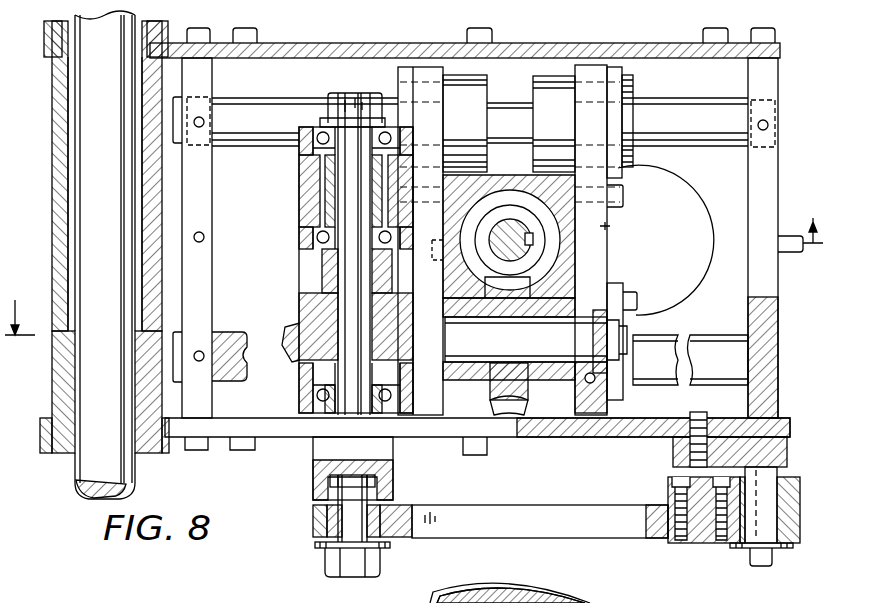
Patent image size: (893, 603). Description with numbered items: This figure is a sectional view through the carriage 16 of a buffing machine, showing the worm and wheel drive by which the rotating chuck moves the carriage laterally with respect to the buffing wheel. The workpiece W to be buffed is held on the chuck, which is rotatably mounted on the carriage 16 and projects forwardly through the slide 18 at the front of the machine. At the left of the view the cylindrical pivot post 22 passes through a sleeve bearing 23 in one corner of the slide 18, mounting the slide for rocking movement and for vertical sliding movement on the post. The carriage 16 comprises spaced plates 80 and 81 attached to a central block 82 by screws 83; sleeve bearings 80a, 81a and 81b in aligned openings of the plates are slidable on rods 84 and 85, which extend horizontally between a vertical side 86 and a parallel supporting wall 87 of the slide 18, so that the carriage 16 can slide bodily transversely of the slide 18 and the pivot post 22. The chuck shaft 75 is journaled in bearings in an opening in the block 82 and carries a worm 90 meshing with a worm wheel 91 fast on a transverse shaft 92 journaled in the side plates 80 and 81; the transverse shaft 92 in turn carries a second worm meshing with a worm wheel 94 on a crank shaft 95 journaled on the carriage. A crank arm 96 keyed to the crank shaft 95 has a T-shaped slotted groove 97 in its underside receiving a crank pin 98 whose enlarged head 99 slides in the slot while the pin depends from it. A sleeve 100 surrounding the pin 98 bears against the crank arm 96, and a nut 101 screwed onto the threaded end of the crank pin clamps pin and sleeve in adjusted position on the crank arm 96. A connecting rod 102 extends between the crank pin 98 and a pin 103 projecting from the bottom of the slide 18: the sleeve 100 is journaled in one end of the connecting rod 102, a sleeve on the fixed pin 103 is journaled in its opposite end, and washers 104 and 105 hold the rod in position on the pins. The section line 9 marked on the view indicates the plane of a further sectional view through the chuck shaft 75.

The section line 9- 9 is at (414, 290).
The carriage 16 is at (612, 228).
The slide 18 is at (791, 57).
The pivot post 22 is at (78, 478).
The sleeve bearing 23 is at (70, 118).
The chuck shaft 75 is at (495, 232).
The plate 80 is at (424, 70).
The sleeve bearing 80a is at (476, 92).
The plate 81 is at (596, 70).
The sleeve bearing 81a is at (547, 78).
The sleeve bearing 81b is at (616, 437).
The central block 82 is at (580, 248).
The screws 83 is at (623, 193).
The rod 84 is at (262, 135).
The rod 85 is at (222, 340).
The vertical side 86 is at (775, 179).
The supporting wall 87 is at (211, 230).
The worm 90 is at (505, 198).
The worm wheel 91 is at (490, 393).
The transverse shaft 92 is at (595, 341).
The worm wheel 94 is at (295, 352).
The crank shaft 95 is at (330, 273).
The crank arm 96 is at (393, 470).
The T-shaped slotted groove 97 is at (332, 480).
The crank pin 98 is at (313, 520).
The enlarged head 99 is at (378, 483).
The sleeve 100 is at (388, 530).
The nut 101 is at (326, 561).
The connecting rod 102 is at (522, 530).
The pin 103 is at (772, 552).
The washer 104 is at (318, 545).
The washer 105 is at (738, 548).
The workpiece W is at (468, 586).